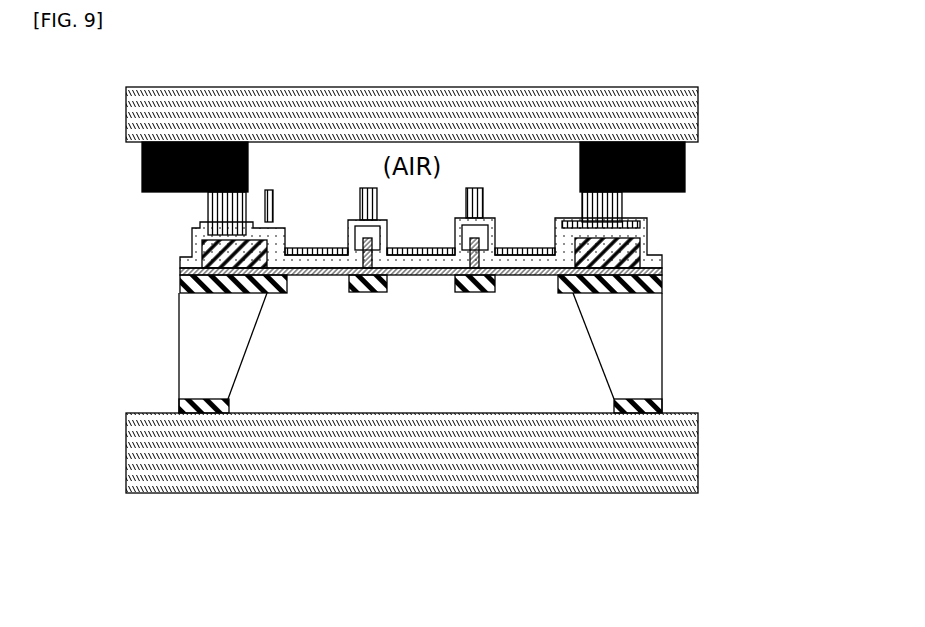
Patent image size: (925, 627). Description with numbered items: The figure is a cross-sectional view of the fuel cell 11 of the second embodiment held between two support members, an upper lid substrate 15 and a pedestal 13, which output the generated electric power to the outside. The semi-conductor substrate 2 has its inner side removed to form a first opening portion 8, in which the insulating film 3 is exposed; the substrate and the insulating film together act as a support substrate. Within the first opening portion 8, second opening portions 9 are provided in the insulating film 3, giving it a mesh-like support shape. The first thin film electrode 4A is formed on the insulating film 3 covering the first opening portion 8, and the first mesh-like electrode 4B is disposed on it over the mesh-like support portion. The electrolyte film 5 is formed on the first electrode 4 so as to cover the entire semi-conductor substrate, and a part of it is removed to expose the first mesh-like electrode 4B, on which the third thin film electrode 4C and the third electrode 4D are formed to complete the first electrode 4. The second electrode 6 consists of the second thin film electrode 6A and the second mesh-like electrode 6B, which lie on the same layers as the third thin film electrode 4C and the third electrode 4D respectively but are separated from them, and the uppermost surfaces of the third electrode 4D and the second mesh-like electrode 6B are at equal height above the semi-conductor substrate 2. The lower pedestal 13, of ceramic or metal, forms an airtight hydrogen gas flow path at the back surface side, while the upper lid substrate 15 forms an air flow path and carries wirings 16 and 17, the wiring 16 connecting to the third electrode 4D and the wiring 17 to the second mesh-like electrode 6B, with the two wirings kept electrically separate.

The semi-conductor substrate 2 is at (655, 343).
The insulating film 3 is at (660, 288).
The first electrode 4 is at (348, 256).
The first thin film electrode 4A is at (180, 283).
The first mesh-like electrode 4B is at (201, 262).
The third thin film electrode 4C is at (200, 232).
The third electrode 4D is at (207, 212).
The electrolyte film 5 is at (660, 262).
The second electrode 6 is at (678, 211).
The second thin film electrode 6A is at (645, 228).
The second mesh-like electrode 6B is at (618, 208).
The first opening portion 8 is at (545, 338).
The second opening portion 9 is at (418, 282).
The fuel cell 11 is at (172, 359).
The pedestal 13 is at (670, 468).
The upper lid substrate 15 is at (660, 120).
The wiring 16 is at (142, 160).
The wiring 17 is at (687, 153).